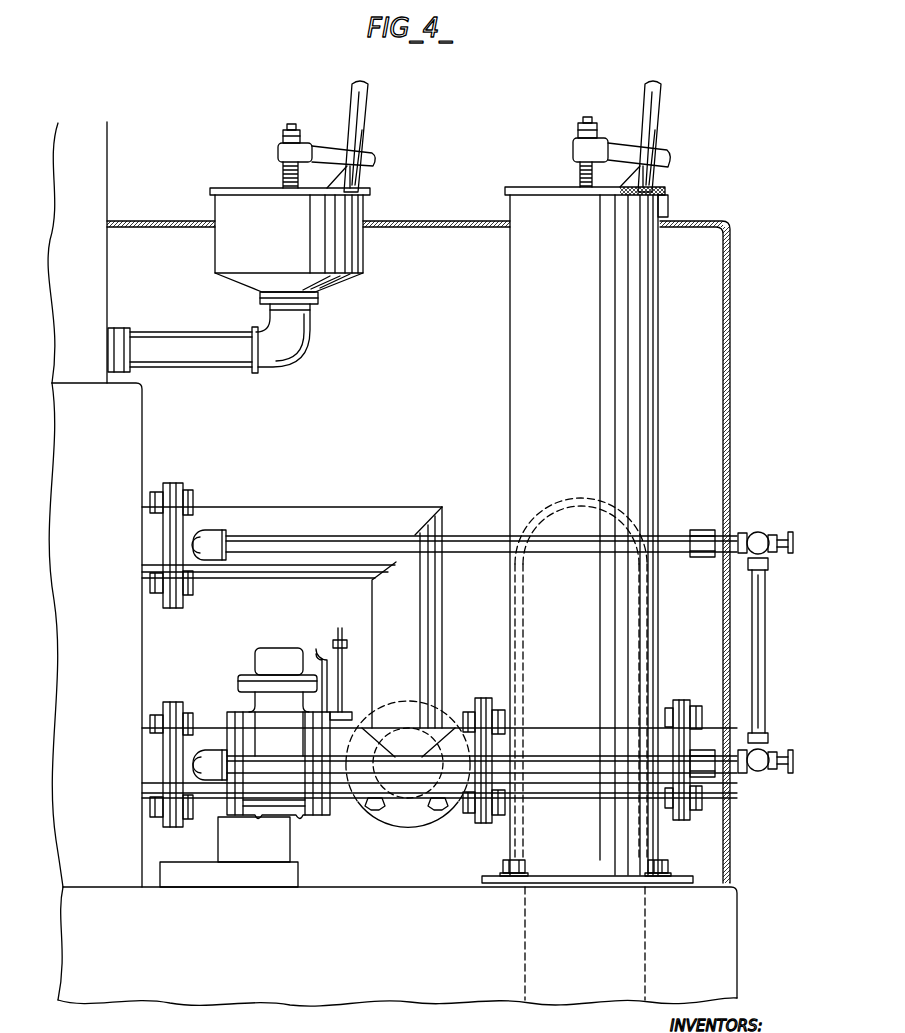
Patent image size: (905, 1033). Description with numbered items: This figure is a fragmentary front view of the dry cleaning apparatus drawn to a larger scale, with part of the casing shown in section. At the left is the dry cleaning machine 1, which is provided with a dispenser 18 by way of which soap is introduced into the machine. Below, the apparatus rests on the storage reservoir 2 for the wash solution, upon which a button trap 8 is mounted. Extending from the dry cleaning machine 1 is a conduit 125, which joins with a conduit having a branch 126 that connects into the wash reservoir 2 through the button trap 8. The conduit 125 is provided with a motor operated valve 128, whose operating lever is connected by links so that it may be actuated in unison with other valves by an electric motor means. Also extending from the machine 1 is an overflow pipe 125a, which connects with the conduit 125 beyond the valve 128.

The dry cleaning machine 1 is at (122, 120).
The storage reservoir for the wash solution 2 is at (397, 946).
The button trap 8 is at (587, 540).
The dispenser 18 is at (323, 262).
The conduit 125 is at (450, 726).
The overflow pipe 125a is at (296, 508).
The branch 126 is at (730, 785).
The motor operated valve 128 is at (280, 650).